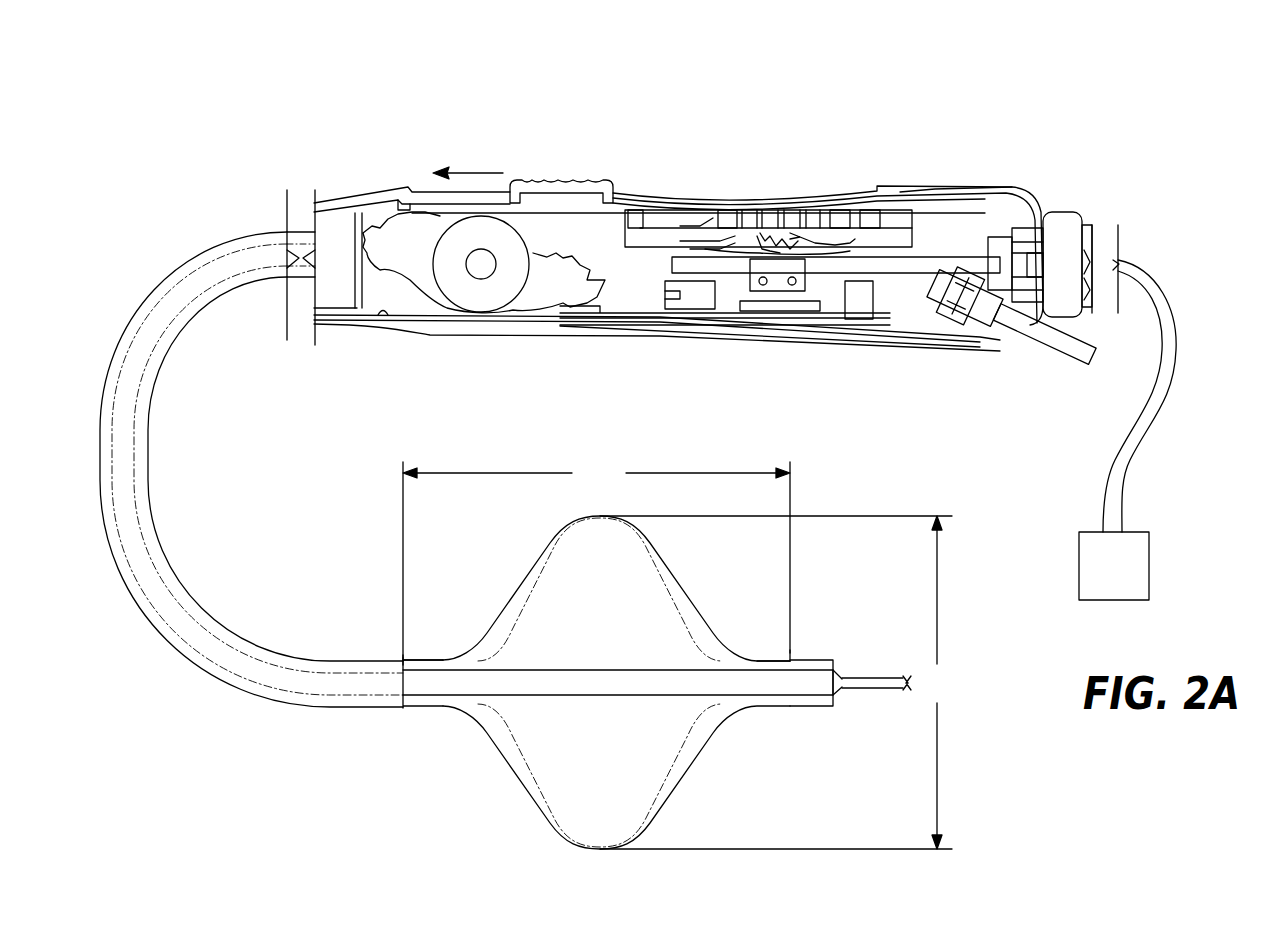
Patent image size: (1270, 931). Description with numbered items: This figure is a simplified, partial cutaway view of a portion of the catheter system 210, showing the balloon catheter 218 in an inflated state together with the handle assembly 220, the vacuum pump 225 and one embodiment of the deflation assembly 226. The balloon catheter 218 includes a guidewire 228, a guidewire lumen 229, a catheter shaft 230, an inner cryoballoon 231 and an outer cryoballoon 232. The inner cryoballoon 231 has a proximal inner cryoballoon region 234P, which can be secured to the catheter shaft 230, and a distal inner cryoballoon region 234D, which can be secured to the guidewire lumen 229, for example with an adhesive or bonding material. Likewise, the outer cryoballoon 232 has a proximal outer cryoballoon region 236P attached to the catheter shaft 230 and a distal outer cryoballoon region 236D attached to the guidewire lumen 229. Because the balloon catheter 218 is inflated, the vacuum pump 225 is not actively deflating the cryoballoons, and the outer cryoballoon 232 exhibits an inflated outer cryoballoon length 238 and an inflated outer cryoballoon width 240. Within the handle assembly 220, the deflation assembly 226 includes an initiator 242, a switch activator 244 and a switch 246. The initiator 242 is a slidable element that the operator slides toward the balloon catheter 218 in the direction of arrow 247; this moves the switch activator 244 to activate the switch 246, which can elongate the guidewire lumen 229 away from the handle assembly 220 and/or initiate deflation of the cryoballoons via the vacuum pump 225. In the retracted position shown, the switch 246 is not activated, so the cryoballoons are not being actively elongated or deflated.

The catheter system 210 is at (250, 185).
The balloon catheter 218 is at (465, 718).
The handle assembly 220 is at (989, 186).
The vacuum pump 225 is at (1132, 579).
The deflation assembly 226 is at (903, 122).
The guidewire 228 is at (875, 692).
The guidewire lumen 229 is at (702, 682).
The catheter shaft 230 is at (273, 646).
The inner cryoballoon 231 is at (538, 598).
The outer cryoballoon 232 is at (546, 550).
The proximal inner cryoballoon region 234P is at (399, 657).
The distal inner cryoballoon region 234D is at (800, 654).
The proximal outer cryoballoon region 236P is at (410, 656).
The distal outer cryoballoon region 236D is at (782, 653).
The inflated outer cryoballoon length 238 is at (596, 560).
The inflated outer cryoballoon width 240 is at (777, 682).
The initiator 242 is at (554, 182).
The switch activator 244 is at (822, 210).
The switch 246 is at (776, 207).
The arrow 247 is at (475, 170).